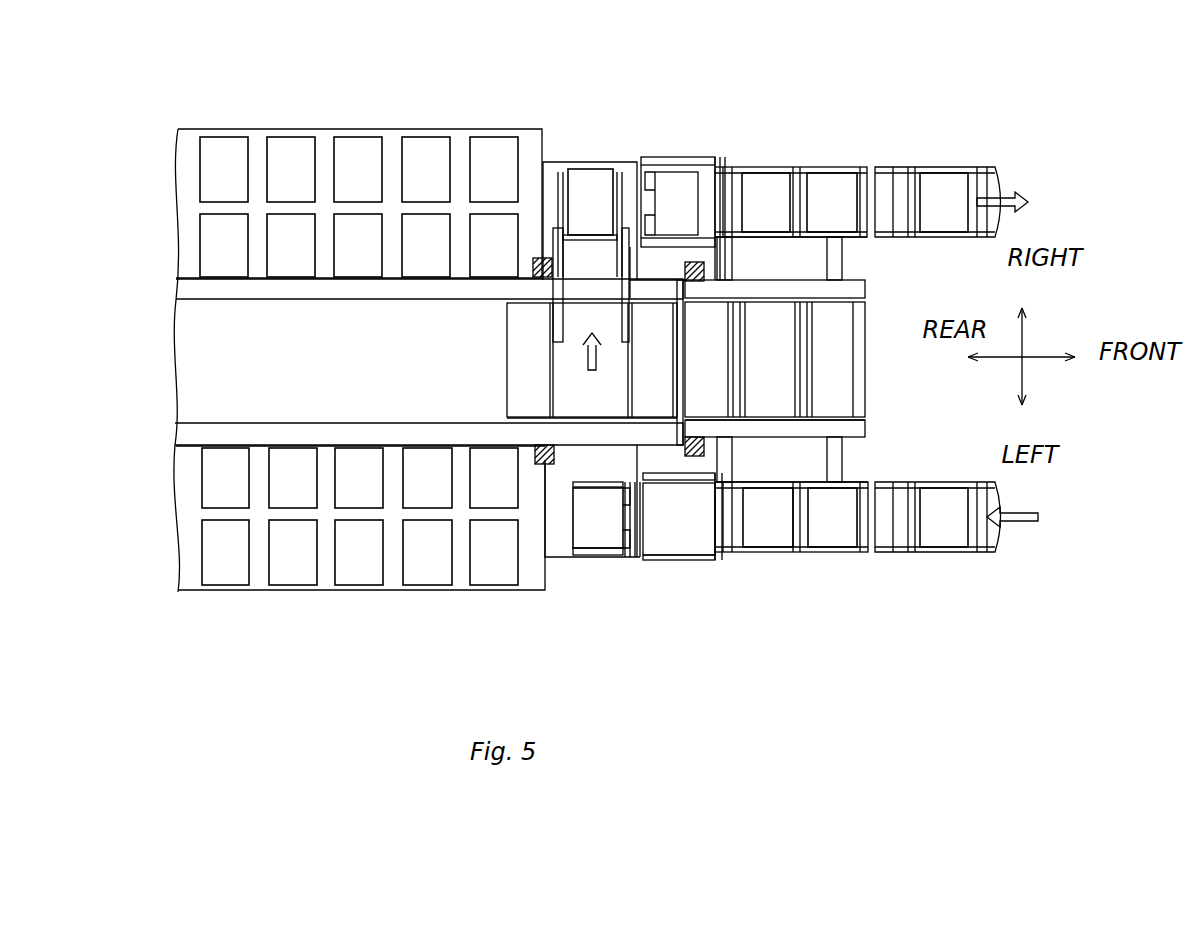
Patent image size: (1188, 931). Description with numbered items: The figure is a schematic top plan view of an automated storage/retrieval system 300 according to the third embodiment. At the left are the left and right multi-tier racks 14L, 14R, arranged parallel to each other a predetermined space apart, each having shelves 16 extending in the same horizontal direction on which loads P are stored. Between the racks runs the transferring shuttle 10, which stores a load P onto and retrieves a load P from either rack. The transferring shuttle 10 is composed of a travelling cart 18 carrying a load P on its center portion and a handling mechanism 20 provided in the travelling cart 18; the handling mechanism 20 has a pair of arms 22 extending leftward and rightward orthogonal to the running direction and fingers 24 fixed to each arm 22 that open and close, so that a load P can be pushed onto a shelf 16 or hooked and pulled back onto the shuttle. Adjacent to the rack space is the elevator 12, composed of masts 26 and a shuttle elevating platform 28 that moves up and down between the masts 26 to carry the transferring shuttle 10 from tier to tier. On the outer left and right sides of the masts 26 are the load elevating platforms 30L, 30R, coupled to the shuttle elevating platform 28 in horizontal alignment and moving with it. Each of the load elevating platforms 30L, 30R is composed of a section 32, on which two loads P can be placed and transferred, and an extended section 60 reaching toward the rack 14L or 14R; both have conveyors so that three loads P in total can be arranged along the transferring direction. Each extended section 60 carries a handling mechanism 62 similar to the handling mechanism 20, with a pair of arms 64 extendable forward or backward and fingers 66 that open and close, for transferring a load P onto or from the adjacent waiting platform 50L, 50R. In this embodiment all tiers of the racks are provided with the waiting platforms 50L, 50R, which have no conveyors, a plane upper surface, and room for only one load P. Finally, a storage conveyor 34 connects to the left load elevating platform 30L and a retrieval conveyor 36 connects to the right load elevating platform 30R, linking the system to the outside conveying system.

The automated storage/retrieval system 300 is at (988, 85).
The elevator 12 is at (872, 300).
The transferring shuttle 10 is at (510, 340).
The travelling cart 18 is at (542, 374).
The handling mechanism 20 is at (548, 385).
The arms 22 is at (625, 365).
The fingers 24 is at (580, 252).
The masts 26 is at (685, 272).
The shuttle elevating platform 28 is at (872, 403).
The right multi-tier rack 14R is at (452, 128).
The left multi-tier rack 14L is at (425, 592).
The shelves 16 is at (328, 136).
The load P is at (218, 155).
The right waiting platform 50R is at (605, 162).
The left waiting platform 50L is at (555, 558).
The extended section 60 is at (720, 175).
The handling mechanism 62 is at (660, 158).
The arms 64 is at (685, 195).
The fingers 66 is at (652, 225).
The right load elevating platform 30R is at (760, 172).
The left load elevating platform 30L is at (735, 554).
The section 32 is at (805, 185).
The retrieval conveyor 36 is at (1000, 166).
The storage conveyor 34 is at (978, 556).